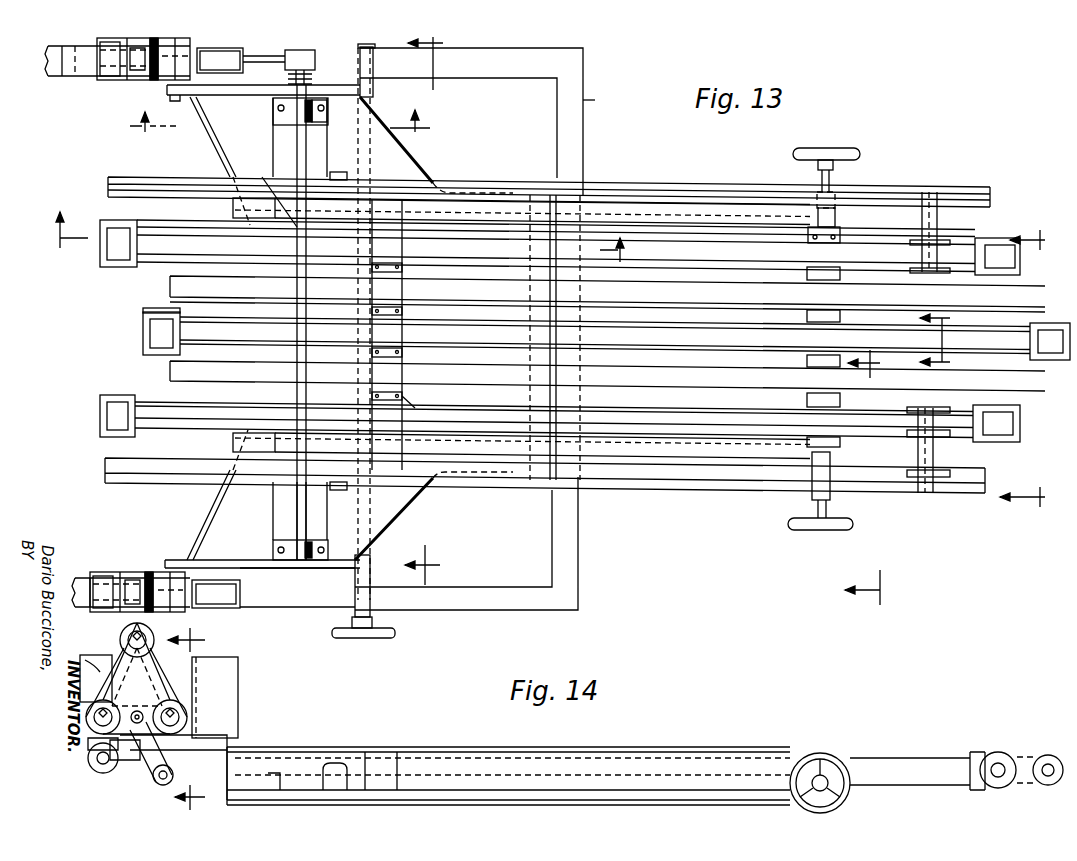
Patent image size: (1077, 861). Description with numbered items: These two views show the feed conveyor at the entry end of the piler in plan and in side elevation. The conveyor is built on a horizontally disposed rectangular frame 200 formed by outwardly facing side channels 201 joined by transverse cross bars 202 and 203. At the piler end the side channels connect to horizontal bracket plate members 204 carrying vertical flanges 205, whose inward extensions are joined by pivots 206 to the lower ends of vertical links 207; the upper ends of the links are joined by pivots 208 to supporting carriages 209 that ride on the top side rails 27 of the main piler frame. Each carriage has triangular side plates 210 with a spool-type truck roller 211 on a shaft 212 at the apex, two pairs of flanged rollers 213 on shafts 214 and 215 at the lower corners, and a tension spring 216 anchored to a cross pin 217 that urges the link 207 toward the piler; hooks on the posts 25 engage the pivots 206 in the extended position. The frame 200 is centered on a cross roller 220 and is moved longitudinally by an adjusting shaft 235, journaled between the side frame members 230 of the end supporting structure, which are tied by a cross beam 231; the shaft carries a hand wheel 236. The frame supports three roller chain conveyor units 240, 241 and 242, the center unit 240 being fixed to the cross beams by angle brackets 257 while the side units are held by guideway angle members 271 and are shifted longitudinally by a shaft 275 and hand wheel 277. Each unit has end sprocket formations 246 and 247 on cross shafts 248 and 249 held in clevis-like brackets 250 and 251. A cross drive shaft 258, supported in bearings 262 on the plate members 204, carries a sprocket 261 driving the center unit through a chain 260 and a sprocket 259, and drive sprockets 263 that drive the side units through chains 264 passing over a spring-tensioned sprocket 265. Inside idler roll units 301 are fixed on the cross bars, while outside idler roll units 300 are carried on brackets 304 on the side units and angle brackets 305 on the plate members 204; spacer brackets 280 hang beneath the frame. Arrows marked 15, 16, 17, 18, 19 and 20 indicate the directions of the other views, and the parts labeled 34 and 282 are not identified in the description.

In FIG. 13, the top side rail 27 is at (60, 78).
In FIG. 14, the top side rail 27 is at (87, 652).
In FIG. 13, the pivot 208 is at (105, 80).
In FIG. 14, the pivot 208 is at (118, 762).
In FIG. 13, the supporting carriage 209 is at (128, 82).
In FIG. 14, the supporting carriage 209 is at (120, 645).
In FIG. 13, the link 207 is at (200, 47).
In FIG. 14, the link 207 is at (150, 765).
In FIG. 13, the pivot 206 is at (195, 88).
In FIG. 14, the pivot 206 is at (145, 775).
In FIG. 13, the flange 205 is at (220, 159).
In FIG. 14, the flange 205 is at (328, 765).
In FIG. 13, the bearing 262 is at (275, 122).
In FIG. 13, the drive sprocket 263 is at (262, 177).
In FIG. 13, the nut 34 is at (328, 112).
In FIG. 13, the angle bracket 305 is at (340, 172).
In FIG. 13, the post 282 is at (374, 90).
In FIG. 13, the section line 20 is at (334, 186).
In FIG. 13, the bracket plate member 204 is at (410, 153).
In FIG. 13, the side frame member 230 is at (507, 78).
In FIG. 13, the cross beam member 231 is at (604, 100).
In FIG. 13, the section line 16 is at (435, 309).
In FIG. 13, the side channel 201 is at (608, 196).
In FIG. 13, the roller chain conveyor unit 242 is at (675, 230).
In FIG. 13, the hand wheel 277 is at (835, 150).
In FIG. 13, the idler roll unit 300 is at (875, 192).
In FIG. 13, the cross bar 202 is at (840, 235).
In FIG. 13, the supporting bracket 304 is at (937, 230).
In FIG. 13, the section line 18 is at (1034, 363).
In FIG. 13, the cross shaft 248 is at (1045, 300).
In FIG. 13, the drive sprocket 259 is at (105, 220).
In FIG. 13, the drive chain 264 is at (233, 208).
In FIG. 13, the sprocket 265 is at (560, 230).
In FIG. 13, the cross bar 203 is at (405, 268).
In FIG. 13, the angle bracket 257 is at (405, 310).
In FIG. 13, the cross roller 220 is at (530, 315).
In FIG. 13, the idler roll unit 301 is at (858, 400).
In FIG. 13, the section line 19 is at (945, 340).
In FIG. 13, the end bearing bracket member 251 is at (165, 312).
In FIG. 13, the cross shaft 249 is at (143, 310).
In FIG. 13, the end sprocket formation 247 is at (143, 328).
In FIG. 13, the sprocket 261 is at (305, 350).
In FIG. 13, the drive chain 260 is at (218, 358).
In FIG. 13, the roller chain conveyor unit 240 is at (715, 333).
In FIG. 13, the section line 17 is at (877, 477).
In FIG. 13, the end bearing bracket member 250 is at (1030, 352).
In FIG. 13, the angle member 271 is at (405, 400).
In FIG. 13, the end sprocket formation 246 is at (1022, 420).
In FIG. 14, the end sprocket formation 246 is at (1050, 755).
In FIG. 13, the drive shaft 258 is at (296, 498).
In FIG. 13, the frame 200 is at (662, 485).
In FIG. 14, the frame 200 is at (912, 775).
In FIG. 13, the roller chain conveyor unit 241 is at (695, 475).
In FIG. 13, the shaft 275 is at (812, 500).
In FIG. 13, the adjusting shaft 235 is at (372, 562).
In FIG. 13, the post 25 is at (222, 608).
In FIG. 13, the hand wheel 236 is at (380, 638).
In FIG. 14, the shaft 215 is at (96, 678).
In FIG. 14, the flanged roller 213 is at (136, 678).
In FIG. 14, the shaft 212 is at (150, 650).
In FIG. 14, the side plate 210 is at (165, 690).
In FIG. 14, the shaft 214 is at (188, 720).
In FIG. 14, the cross pin 217 is at (95, 735).
In FIG. 14, the tension spring 216 is at (97, 772).
In FIG. 14, the truck roller 211 is at (155, 638).
In FIG. 14, the section line 15 is at (199, 719).
In FIG. 14, the spacer bracket 280 is at (822, 753).